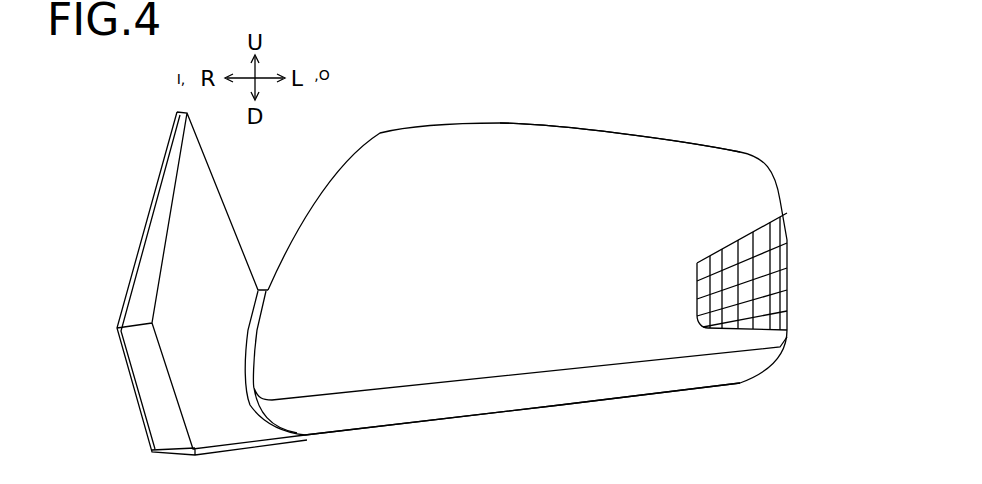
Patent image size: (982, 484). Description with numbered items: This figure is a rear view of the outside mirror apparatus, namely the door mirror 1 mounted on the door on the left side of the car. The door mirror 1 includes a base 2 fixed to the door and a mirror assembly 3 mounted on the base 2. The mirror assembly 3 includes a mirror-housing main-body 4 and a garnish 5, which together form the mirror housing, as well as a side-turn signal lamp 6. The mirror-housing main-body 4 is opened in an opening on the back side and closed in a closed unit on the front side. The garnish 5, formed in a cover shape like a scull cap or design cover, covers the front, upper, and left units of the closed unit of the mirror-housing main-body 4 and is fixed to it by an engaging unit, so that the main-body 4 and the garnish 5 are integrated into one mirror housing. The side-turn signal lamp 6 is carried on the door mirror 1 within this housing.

The door mirror 1 is at (386, 117).
The base 2 is at (158, 165).
The mirror assembly 3 is at (588, 116).
The mirror-housing main-body 4 is at (585, 387).
The garnish 5 is at (672, 153).
The side-turn signal lamp 6 is at (782, 235).